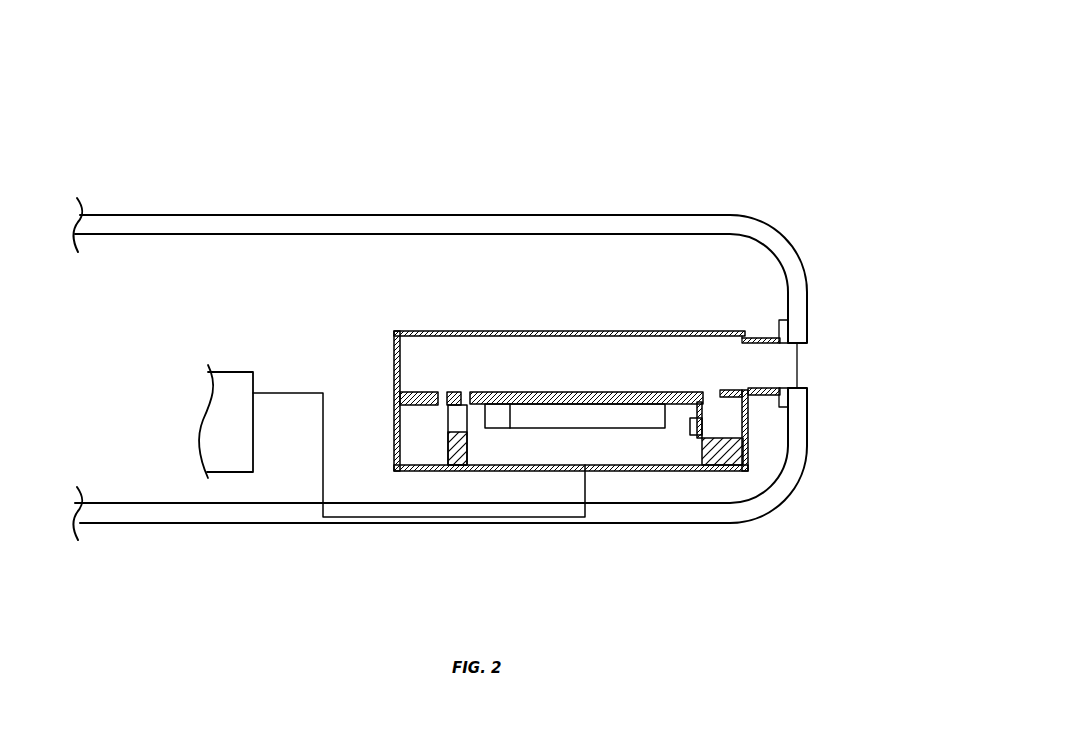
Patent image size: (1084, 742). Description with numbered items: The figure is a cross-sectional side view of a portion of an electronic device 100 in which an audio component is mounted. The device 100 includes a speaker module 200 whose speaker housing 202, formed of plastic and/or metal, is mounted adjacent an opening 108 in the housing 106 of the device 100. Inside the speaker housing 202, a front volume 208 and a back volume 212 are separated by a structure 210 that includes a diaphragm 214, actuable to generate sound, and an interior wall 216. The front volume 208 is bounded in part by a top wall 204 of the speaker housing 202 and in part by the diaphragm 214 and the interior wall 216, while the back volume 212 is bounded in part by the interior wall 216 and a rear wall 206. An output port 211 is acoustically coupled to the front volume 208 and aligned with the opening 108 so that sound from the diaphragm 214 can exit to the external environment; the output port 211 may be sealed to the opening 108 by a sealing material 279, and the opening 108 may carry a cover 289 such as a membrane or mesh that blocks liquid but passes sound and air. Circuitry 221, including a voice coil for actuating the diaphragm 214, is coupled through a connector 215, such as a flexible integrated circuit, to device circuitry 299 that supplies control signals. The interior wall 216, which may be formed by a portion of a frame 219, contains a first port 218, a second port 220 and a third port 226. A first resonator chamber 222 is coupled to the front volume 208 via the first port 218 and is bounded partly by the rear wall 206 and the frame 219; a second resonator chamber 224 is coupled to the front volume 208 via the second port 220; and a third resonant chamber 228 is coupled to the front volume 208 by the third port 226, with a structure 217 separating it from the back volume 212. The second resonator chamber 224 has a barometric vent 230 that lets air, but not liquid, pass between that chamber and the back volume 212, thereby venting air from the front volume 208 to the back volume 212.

The device 100 is at (712, 124).
The housing 106 is at (770, 240).
The opening 108 is at (810, 348).
The speaker module 200 is at (598, 373).
The housing 202 is at (598, 381).
The top wall 204 is at (627, 332).
The rear wall 206 is at (592, 472).
The front volume 208 is at (570, 363).
The structure 210 is at (497, 391).
The output port 211 is at (774, 364).
The back volume 212 is at (526, 452).
The diaphragm 214 is at (530, 391).
The connector 215 is at (296, 393).
The interior wall 216 is at (458, 391).
The structure 217 is at (493, 448).
The first port 218 is at (445, 391).
The frame 219 is at (446, 440).
The second port 220 is at (713, 408).
The circuitry 221 is at (620, 420).
The first resonator chamber 222 is at (414, 445).
The second resonator chamber 224 is at (712, 440).
The third port 226 is at (450, 464).
The third resonant chamber 228 is at (460, 464).
The barometric vent 230 is at (703, 468).
The sealing material 279 is at (789, 334).
The cover 289 is at (798, 391).
The device circuitry 299 is at (229, 370).